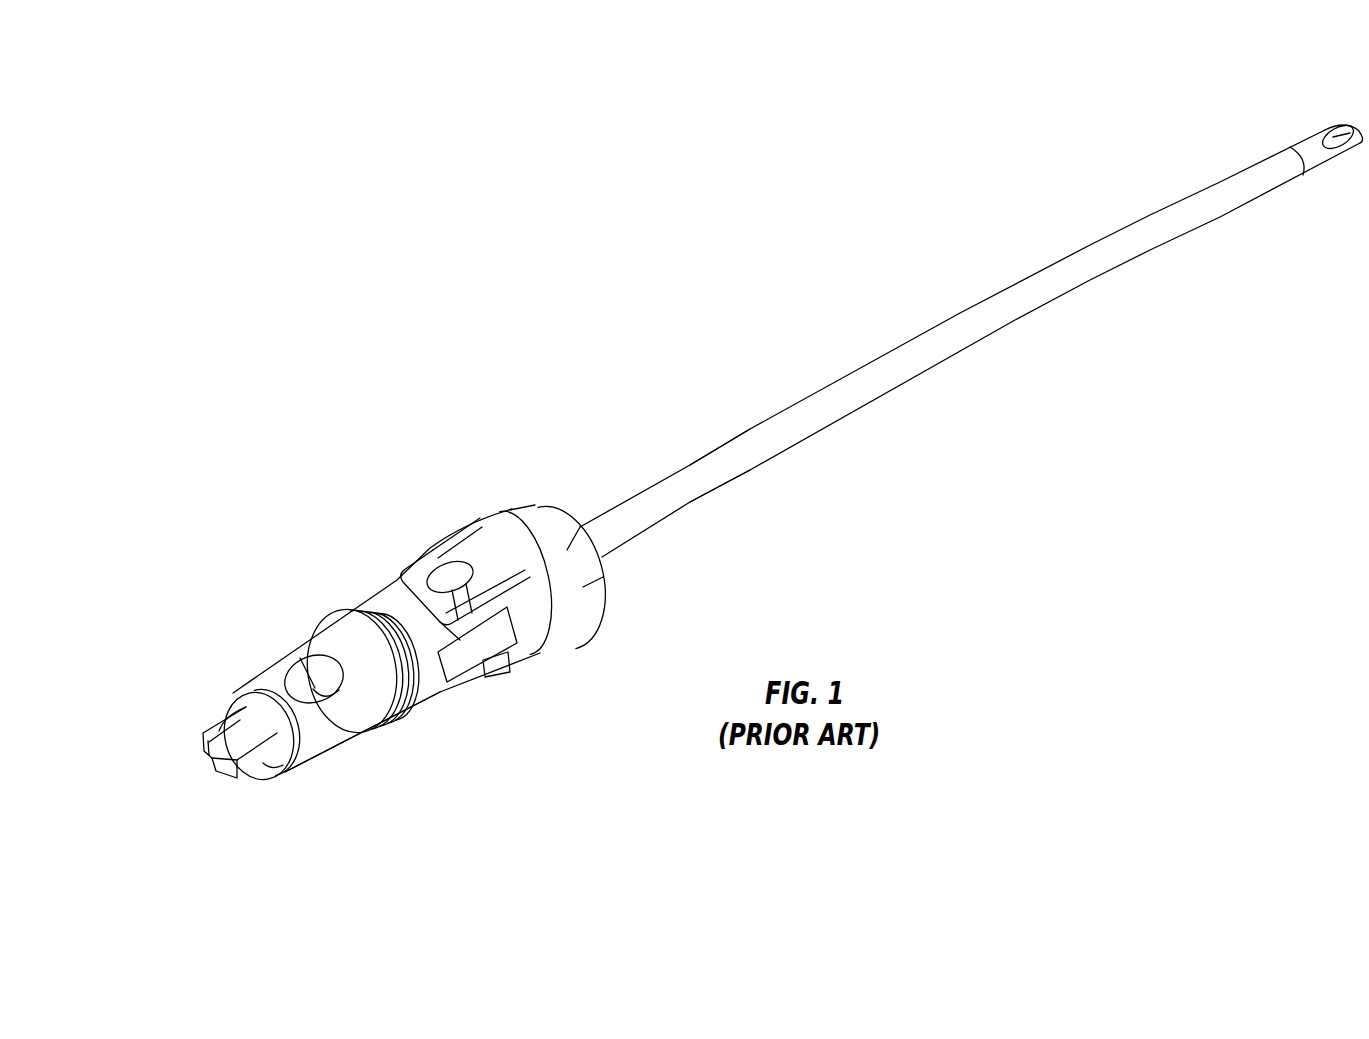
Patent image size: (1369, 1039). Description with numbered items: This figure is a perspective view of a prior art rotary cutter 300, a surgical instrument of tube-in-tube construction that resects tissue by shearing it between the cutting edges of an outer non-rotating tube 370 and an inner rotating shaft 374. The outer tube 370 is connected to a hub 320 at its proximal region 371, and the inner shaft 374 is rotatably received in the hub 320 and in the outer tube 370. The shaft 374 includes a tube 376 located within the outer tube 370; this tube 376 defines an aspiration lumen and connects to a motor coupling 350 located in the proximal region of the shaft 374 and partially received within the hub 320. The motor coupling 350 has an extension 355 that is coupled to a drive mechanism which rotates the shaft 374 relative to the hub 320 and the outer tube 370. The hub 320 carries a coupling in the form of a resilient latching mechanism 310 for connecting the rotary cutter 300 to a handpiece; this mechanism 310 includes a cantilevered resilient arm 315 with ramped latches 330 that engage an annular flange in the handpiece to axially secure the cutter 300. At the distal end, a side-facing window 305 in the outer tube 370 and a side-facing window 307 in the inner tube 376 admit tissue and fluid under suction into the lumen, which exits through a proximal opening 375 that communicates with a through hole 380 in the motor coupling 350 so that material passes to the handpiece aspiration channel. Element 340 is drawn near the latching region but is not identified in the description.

The rotary cutter 300 is at (690, 368).
The side-facing window 305 is at (1325, 133).
The side-facing window 307 is at (1341, 135).
The resilient latching mechanism 310 is at (487, 560).
The cantilevered resilient arm 315 is at (470, 550).
The hub 320 is at (350, 603).
The ramped latches 330 is at (413, 580).
The slot 340 is at (447, 615).
The motor coupling 350 is at (243, 685).
The extension 355 is at (219, 733).
The outer non-rotating tube 370 is at (913, 353).
The proximal region 371 is at (730, 478).
The inner rotating shaft 374 is at (333, 733).
The proximal opening 375 is at (320, 683).
The tube 376 is at (1362, 143).
The through hole 380 is at (305, 688).